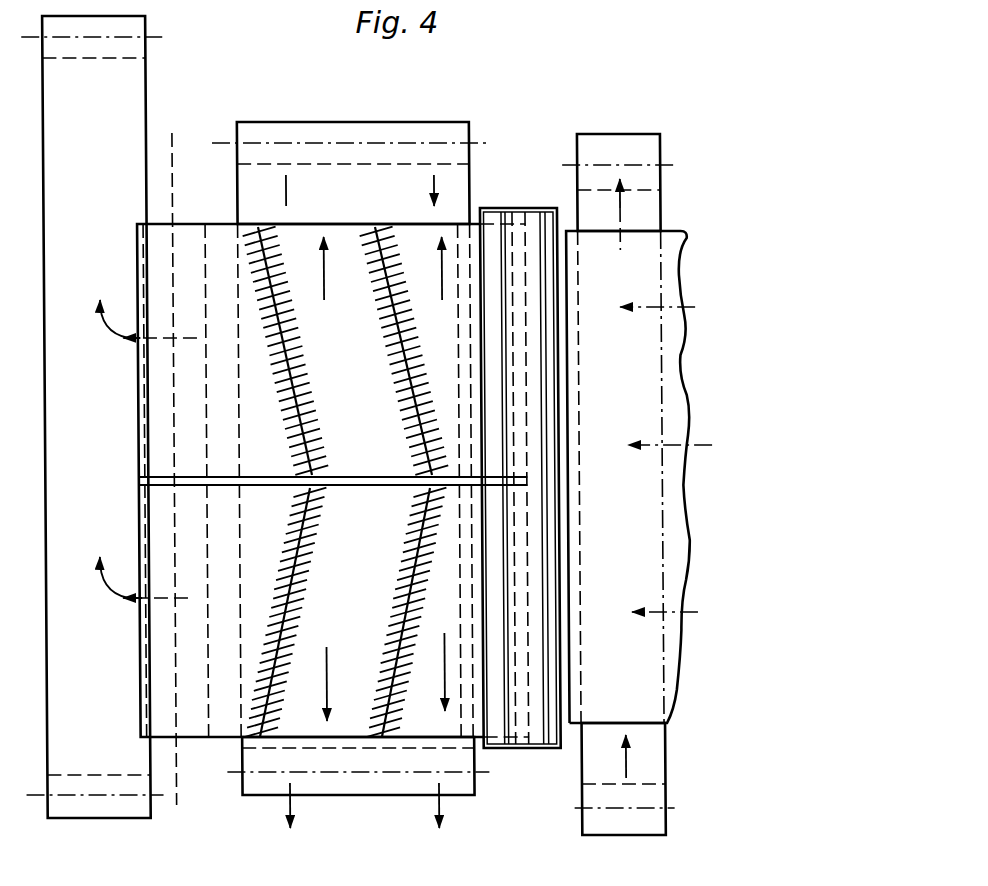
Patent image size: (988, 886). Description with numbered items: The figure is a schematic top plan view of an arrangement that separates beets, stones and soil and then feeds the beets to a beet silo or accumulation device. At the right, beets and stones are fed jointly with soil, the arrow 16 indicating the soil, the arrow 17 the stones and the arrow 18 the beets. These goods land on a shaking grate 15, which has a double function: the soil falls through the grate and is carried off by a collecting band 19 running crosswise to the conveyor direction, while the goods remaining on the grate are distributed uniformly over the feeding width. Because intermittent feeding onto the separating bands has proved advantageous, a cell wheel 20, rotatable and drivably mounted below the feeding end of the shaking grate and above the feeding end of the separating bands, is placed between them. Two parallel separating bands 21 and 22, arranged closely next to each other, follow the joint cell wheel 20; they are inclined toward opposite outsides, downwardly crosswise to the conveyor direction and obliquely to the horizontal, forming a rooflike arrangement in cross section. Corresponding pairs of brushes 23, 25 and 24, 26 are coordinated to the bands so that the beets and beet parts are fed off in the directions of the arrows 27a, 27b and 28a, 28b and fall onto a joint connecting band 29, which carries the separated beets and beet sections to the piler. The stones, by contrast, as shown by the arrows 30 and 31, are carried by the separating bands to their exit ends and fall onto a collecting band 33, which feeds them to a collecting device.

The shaking grate 15 is at (643, 477).
The arrow 16 is at (650, 308).
The arrow 17 is at (654, 446).
The arrow 18 is at (646, 614).
The collecting band 19 is at (591, 146).
The cell wheel 20 is at (536, 214).
The separating band 21 is at (338, 238).
The separating band 22 is at (355, 725).
The brush 23 is at (392, 375).
The brush 24 is at (383, 633).
The brush 25 is at (309, 450).
The brush 26 is at (306, 542).
The arrow 27a is at (440, 281).
The arrow 27b is at (321, 282).
The arrow 28a is at (438, 670).
The arrow 28b is at (323, 692).
The connecting band 29 is at (360, 128).
The arrow 30 is at (168, 337).
The arrow 31 is at (171, 597).
The collecting band 33 is at (114, 813).